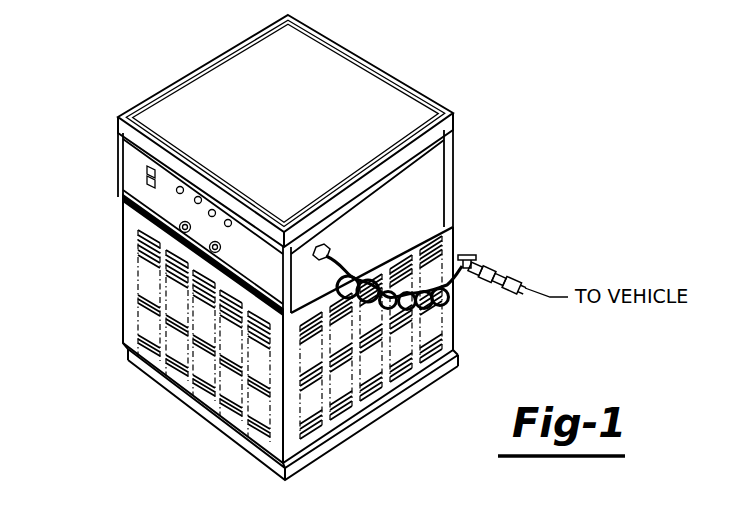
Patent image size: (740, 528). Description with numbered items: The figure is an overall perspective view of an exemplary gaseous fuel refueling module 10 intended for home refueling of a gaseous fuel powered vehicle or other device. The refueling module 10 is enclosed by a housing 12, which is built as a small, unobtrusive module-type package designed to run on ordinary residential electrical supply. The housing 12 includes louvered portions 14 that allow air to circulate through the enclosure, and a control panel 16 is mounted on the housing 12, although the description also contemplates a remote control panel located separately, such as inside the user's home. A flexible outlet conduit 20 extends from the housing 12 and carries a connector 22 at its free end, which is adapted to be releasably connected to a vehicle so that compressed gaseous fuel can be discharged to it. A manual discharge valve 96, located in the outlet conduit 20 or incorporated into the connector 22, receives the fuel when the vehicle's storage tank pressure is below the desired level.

The refueling module 10 is at (425, 55).
The housing 12 is at (412, 190).
The louvered portions 14 is at (130, 290).
The control panel 16 is at (165, 199).
The flexible outlet conduit 20 is at (363, 270).
The connector 22 is at (517, 272).
The manual discharge valve 96 is at (467, 257).